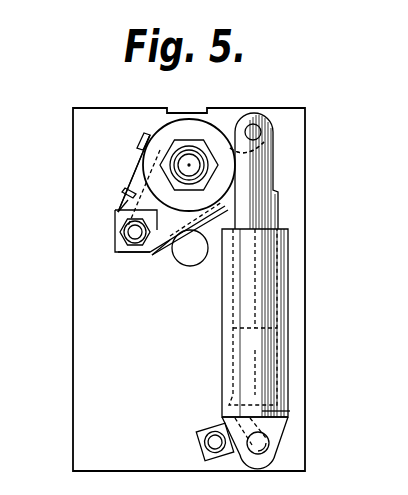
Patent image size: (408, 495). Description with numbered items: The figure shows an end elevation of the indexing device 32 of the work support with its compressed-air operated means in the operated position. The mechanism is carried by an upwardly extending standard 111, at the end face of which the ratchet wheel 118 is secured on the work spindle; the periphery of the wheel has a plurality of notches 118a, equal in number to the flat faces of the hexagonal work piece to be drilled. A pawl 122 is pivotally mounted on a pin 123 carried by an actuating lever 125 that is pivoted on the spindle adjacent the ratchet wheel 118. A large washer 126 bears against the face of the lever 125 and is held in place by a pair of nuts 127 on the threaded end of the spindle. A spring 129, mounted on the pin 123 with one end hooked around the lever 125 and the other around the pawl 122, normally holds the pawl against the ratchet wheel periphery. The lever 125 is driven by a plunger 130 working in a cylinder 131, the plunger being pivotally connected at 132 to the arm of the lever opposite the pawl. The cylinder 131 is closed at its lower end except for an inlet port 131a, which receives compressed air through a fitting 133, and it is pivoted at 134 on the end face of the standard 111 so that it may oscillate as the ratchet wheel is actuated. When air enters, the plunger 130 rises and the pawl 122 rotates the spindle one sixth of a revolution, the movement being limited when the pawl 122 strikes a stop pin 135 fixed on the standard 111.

The indexing device 32 is at (136, 150).
The standard 111 is at (126, 378).
The ratchet wheel 118 is at (141, 150).
The notches 118a is at (193, 119).
The pawl 122 is at (165, 256).
The pin 123 is at (132, 232).
The actuating lever 125 is at (128, 192).
The large washer 126 is at (224, 172).
The nuts 127 is at (172, 142).
The spring 129 is at (125, 198).
The plunger 130 is at (265, 215).
The cylinder 131 is at (290, 273).
The inlet port 131a is at (265, 410).
The pivotal connection 132 is at (255, 132).
The fitting 133 is at (204, 438).
The pivot pin 134 is at (262, 446).
The stop pin 135 is at (196, 263).